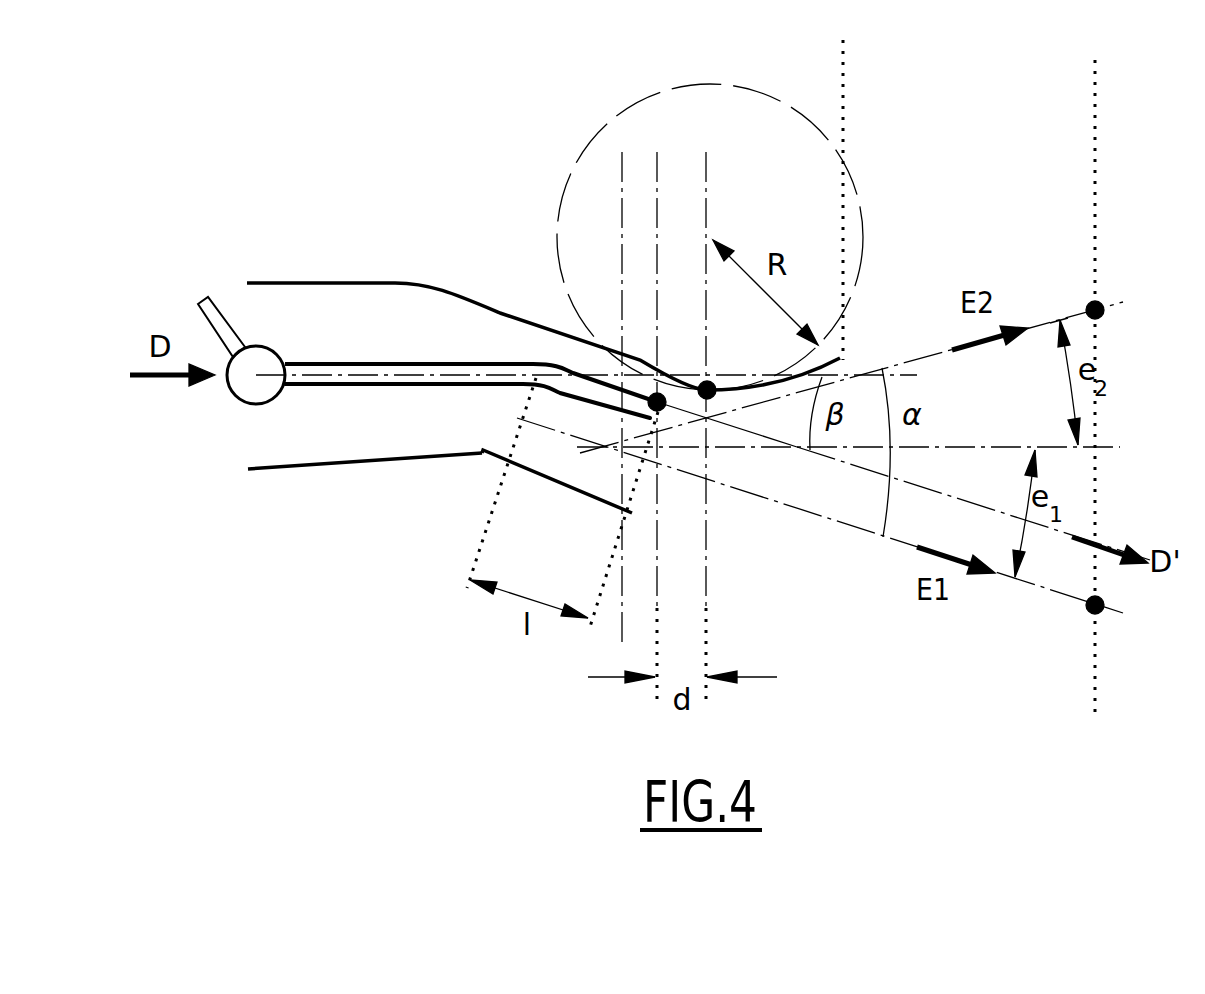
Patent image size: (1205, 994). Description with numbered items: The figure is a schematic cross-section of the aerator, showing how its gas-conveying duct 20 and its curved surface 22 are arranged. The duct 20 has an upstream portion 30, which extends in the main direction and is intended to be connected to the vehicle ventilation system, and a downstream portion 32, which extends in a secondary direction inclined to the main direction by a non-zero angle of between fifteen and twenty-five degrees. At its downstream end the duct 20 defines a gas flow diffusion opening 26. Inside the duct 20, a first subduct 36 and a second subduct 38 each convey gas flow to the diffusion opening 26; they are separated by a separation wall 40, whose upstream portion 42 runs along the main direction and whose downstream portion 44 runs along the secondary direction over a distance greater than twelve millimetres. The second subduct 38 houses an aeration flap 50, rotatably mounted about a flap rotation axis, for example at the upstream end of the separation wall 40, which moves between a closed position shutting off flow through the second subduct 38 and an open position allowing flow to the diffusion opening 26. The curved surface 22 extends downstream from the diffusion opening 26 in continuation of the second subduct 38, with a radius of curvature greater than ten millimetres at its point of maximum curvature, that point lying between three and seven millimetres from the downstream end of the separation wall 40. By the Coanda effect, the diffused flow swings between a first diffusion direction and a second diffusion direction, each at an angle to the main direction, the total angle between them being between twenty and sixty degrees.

The duct 20 is at (244, 503).
The curved surface 22 is at (840, 358).
The gas flow diffusion opening 26 is at (652, 508).
The upstream portion 30 is at (362, 490).
The downstream portion 32 is at (548, 508).
The first subduct 36 is at (313, 443).
The second subduct 38 is at (355, 303).
The separation wall 40 is at (471, 345).
The upstream portion of the separation wall 42 is at (417, 362).
The downstream portion of the separation wall 44 is at (603, 385).
The aeration flap 50 is at (202, 296).